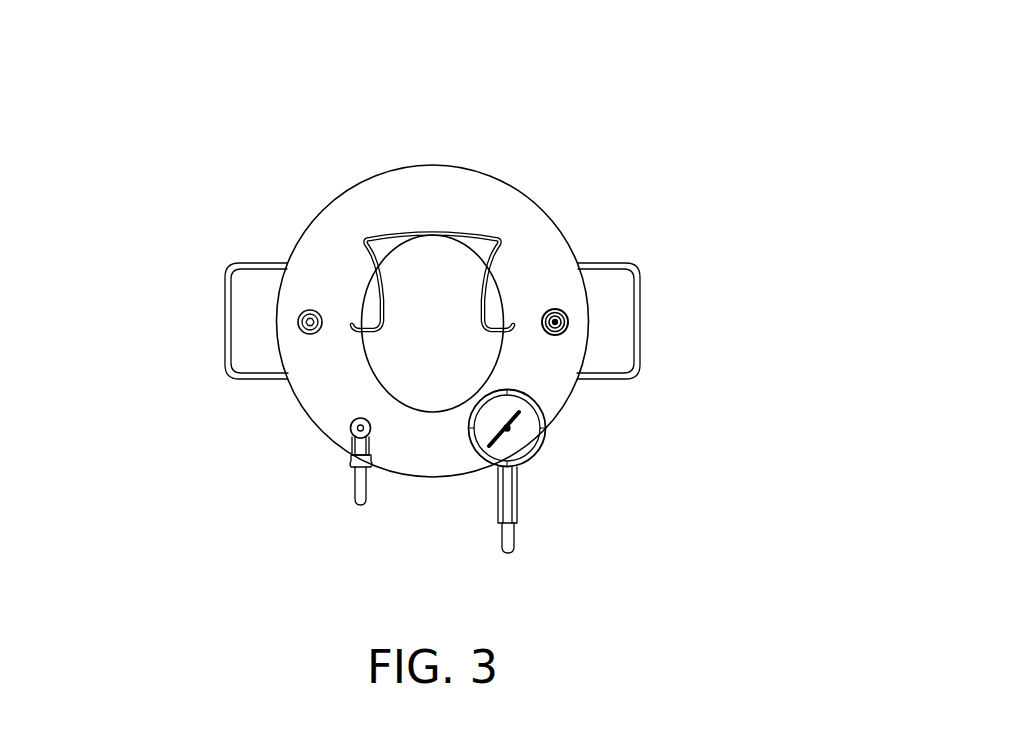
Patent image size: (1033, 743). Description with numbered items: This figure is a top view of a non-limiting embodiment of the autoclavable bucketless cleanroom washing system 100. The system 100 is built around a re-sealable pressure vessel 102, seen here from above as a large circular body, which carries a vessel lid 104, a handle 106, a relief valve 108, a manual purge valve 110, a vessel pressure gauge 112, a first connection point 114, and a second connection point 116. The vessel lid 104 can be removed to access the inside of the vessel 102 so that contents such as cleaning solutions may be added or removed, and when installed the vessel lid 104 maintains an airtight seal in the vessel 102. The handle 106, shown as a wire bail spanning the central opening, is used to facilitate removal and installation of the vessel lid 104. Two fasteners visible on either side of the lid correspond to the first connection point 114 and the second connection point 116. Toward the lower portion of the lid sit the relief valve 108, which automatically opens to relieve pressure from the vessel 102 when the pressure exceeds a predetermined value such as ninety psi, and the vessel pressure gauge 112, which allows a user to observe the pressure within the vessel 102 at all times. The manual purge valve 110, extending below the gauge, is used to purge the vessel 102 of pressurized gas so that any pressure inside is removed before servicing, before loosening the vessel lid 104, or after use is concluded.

The autoclavable bucketless cleanroom washing system 100 is at (513, 85).
The re-sealable pressure vessel 102 is at (563, 230).
The vessel lid 104 is at (430, 333).
The handle 106 is at (366, 240).
The relief valve 108 is at (351, 437).
The manual purge valve 110 is at (517, 493).
The vessel pressure gauge 112 is at (543, 409).
The first connection point 114 is at (568, 320).
The second connection point 116 is at (298, 316).